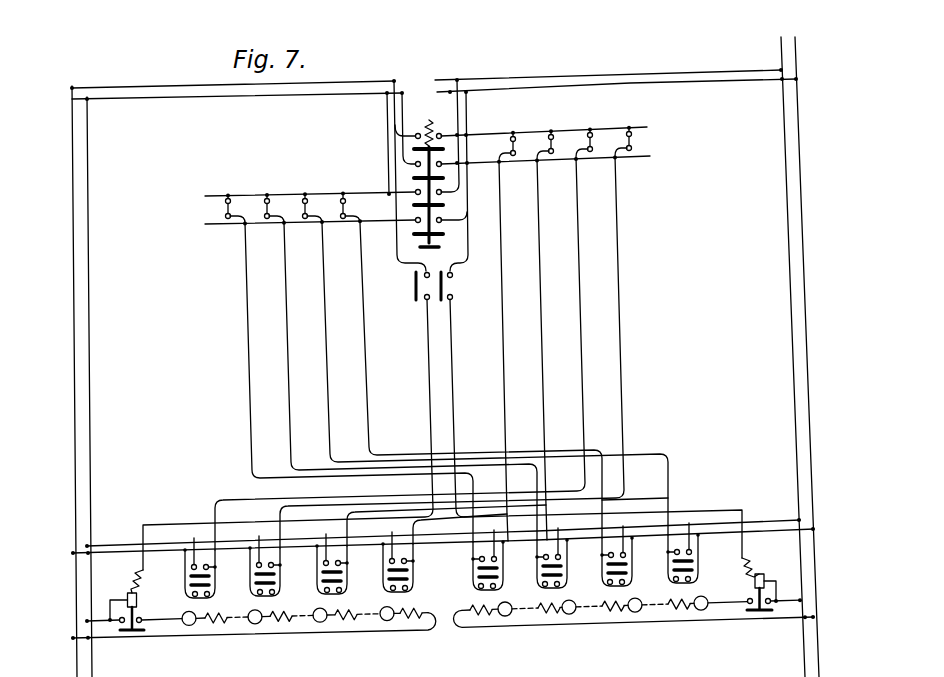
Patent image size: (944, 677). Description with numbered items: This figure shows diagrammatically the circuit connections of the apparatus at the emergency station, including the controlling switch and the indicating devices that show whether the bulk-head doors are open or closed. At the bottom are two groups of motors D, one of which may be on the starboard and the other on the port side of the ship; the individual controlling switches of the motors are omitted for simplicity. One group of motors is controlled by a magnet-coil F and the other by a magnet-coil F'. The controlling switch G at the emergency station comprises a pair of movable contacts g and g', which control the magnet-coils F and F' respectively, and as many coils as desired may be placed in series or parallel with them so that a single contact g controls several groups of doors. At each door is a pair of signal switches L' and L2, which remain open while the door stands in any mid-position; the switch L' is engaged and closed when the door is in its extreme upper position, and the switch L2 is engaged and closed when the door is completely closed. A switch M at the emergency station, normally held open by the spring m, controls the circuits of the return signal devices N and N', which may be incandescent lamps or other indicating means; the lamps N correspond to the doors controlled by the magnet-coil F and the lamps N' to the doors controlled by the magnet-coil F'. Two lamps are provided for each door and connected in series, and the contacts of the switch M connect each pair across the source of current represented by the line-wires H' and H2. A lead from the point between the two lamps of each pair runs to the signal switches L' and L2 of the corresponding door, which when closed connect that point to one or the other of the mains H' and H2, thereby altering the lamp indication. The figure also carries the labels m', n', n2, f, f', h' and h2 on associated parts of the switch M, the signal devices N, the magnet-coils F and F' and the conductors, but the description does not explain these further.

The line-wire H' is at (95, 381).
The line-wire H2 is at (70, 455).
The switch M is at (447, 204).
The spring m is at (436, 124).
The contact bars of switch M m' is at (453, 192).
The return signal devices N is at (432, 326).
The contact of bank N n' is at (563, 324).
The contact of bank N n2 is at (566, 164).
The return signal devices N' is at (436, 351).
The controlling switch G is at (431, 299).
The movable contact g is at (401, 287).
The movable contact g' is at (459, 286).
The magnet-coil F is at (124, 616).
The armature of relay F f is at (132, 637).
The magnet-coil F' is at (765, 596).
The armature of relay F' f' is at (759, 617).
The conductor h' is at (133, 611).
The conductor h2 is at (172, 638).
The signal switch L' is at (441, 572).
The signal switch L2 is at (218, 592).
The groups of motors D is at (215, 628).